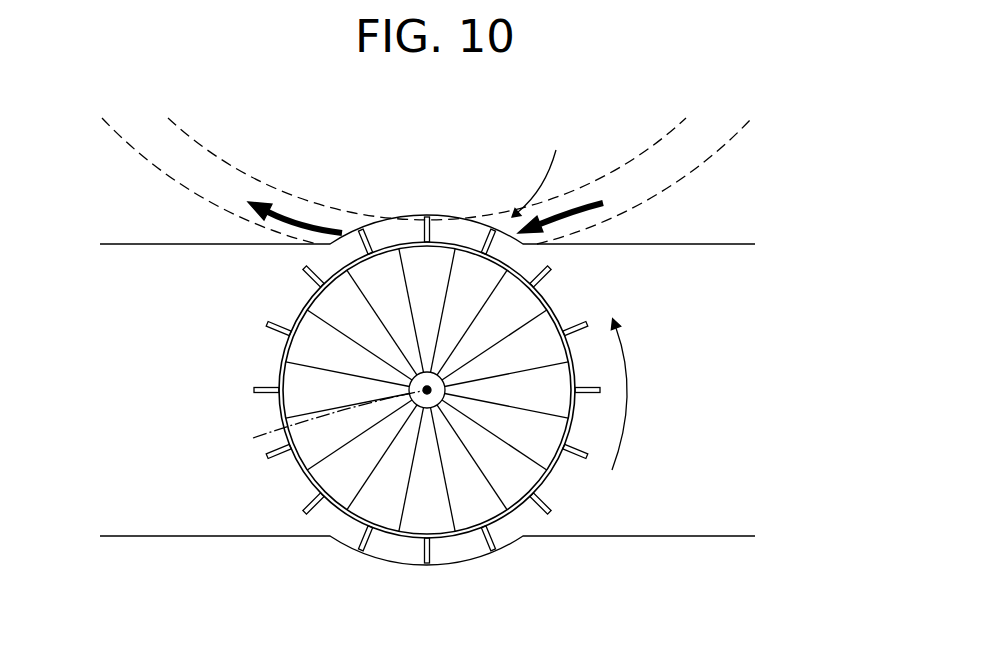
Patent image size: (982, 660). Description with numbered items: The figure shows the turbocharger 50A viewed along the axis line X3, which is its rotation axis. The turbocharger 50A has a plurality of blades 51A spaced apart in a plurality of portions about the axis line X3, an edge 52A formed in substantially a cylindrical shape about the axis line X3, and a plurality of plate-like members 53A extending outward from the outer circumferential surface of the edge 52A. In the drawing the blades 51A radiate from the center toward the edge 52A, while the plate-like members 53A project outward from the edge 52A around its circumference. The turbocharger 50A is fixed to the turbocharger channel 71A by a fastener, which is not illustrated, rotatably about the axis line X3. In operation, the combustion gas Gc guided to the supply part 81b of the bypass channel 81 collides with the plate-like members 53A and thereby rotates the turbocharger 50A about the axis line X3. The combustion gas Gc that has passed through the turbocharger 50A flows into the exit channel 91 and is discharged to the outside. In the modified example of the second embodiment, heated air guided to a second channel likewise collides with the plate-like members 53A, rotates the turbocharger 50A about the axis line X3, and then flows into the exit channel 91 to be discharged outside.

The turbocharger 50A is at (407, 370).
The blades 51A is at (445, 252).
The edge 52A is at (310, 292).
The plate-like members 53A is at (419, 218).
The turbocharger channel 71A is at (718, 245).
The bypass channel 81 is at (700, 175).
The supply part 81b is at (544, 171).
The exit channel 91 is at (146, 160).
The axis line X3 is at (326, 422).
The combustion gas Gc is at (297, 217).